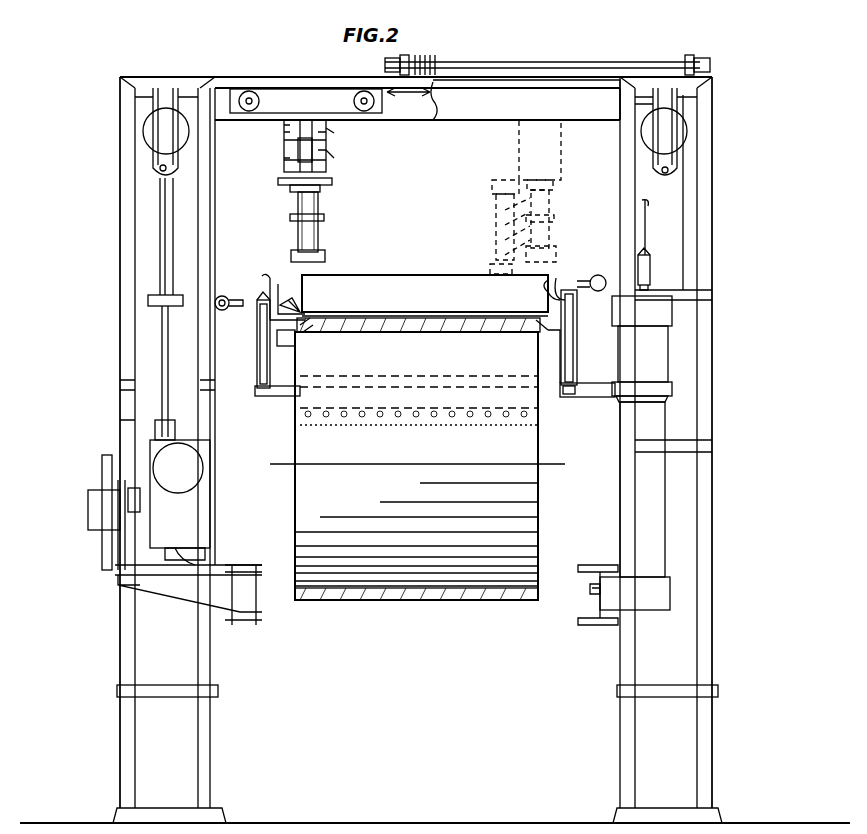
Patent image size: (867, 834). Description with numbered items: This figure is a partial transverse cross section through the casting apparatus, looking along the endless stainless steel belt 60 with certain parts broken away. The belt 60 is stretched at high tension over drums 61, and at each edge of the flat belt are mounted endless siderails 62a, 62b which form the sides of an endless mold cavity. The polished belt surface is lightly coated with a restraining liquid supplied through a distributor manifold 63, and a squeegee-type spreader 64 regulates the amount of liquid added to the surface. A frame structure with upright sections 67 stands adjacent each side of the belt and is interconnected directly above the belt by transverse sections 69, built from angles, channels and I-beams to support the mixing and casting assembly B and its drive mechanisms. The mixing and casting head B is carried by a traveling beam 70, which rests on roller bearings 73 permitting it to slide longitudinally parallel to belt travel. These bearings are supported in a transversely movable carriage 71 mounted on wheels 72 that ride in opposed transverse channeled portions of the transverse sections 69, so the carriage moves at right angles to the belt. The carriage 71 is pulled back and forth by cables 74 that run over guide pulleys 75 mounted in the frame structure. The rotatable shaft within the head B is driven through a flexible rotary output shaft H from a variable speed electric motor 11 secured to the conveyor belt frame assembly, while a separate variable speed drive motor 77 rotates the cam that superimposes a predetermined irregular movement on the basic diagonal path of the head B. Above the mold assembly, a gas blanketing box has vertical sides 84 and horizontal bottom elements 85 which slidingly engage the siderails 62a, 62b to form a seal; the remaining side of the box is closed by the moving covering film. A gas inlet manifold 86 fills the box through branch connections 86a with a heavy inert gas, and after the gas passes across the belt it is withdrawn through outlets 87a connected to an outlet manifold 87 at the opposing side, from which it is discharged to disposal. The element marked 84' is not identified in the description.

The upright sections 67 is at (122, 412).
The transverse sections 69 is at (320, 78).
The traveling beam 70 is at (326, 134).
The roller bearings 73 is at (285, 150).
The transversely movable carriage 71 is at (283, 88).
The wheels 72 is at (249, 90).
The guide pulleys 75 is at (143, 128).
The cables 74 is at (135, 218).
The mixing and casting head device B is at (333, 206).
The flexible rotary output shaft H is at (653, 208).
The vertical sides 84 is at (452, 280).
The platform end bracket 84' is at (271, 261).
The horizontal bottom elements 85 is at (257, 350).
The gas inlet manifold 86 is at (225, 296).
The branch connections 86a is at (240, 298).
The outlet manifold 87 is at (600, 274).
The outlets 87a is at (583, 292).
The variable speed electric motor 11 is at (625, 460).
The variable speed drive motor 77 is at (167, 371).
The endless siderail 62a is at (313, 325).
The endless siderail 62b is at (538, 332).
The endless stainless steel belt 60 is at (372, 332).
The drums 61 is at (538, 500).
The squeegee-type spreader 64 is at (388, 388).
The distributor manifold 63 is at (470, 425).